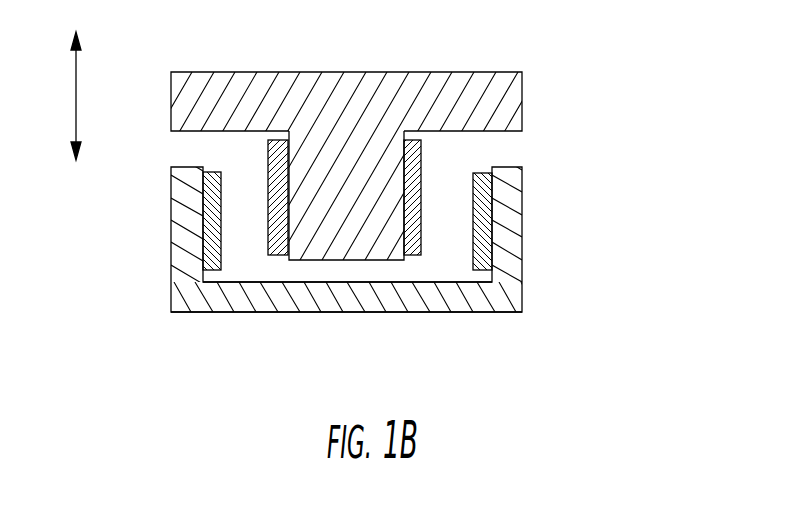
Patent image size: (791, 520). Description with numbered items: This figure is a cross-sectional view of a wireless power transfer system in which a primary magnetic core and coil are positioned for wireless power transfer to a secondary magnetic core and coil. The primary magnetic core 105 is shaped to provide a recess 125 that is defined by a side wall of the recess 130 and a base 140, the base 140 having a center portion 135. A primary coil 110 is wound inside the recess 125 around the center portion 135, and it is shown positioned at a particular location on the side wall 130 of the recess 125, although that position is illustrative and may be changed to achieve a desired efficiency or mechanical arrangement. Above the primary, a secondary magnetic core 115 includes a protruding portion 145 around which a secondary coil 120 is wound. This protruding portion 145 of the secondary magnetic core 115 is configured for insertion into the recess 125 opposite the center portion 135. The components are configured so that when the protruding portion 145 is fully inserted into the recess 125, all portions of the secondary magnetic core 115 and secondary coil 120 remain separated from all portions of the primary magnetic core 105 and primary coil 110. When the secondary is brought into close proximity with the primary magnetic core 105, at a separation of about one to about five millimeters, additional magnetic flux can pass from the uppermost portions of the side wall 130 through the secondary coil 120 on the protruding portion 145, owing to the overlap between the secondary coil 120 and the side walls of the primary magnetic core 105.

The primary magnetic core 105 is at (523, 292).
The primary coil 110 is at (483, 170).
The secondary magnetic core 115 is at (523, 112).
The secondary coil 120 is at (269, 177).
The recess 125 is at (257, 264).
The side wall of the recess 130 is at (484, 206).
The center portion 135 is at (331, 268).
The base 140 is at (422, 300).
The protruding portion 145 is at (365, 206).